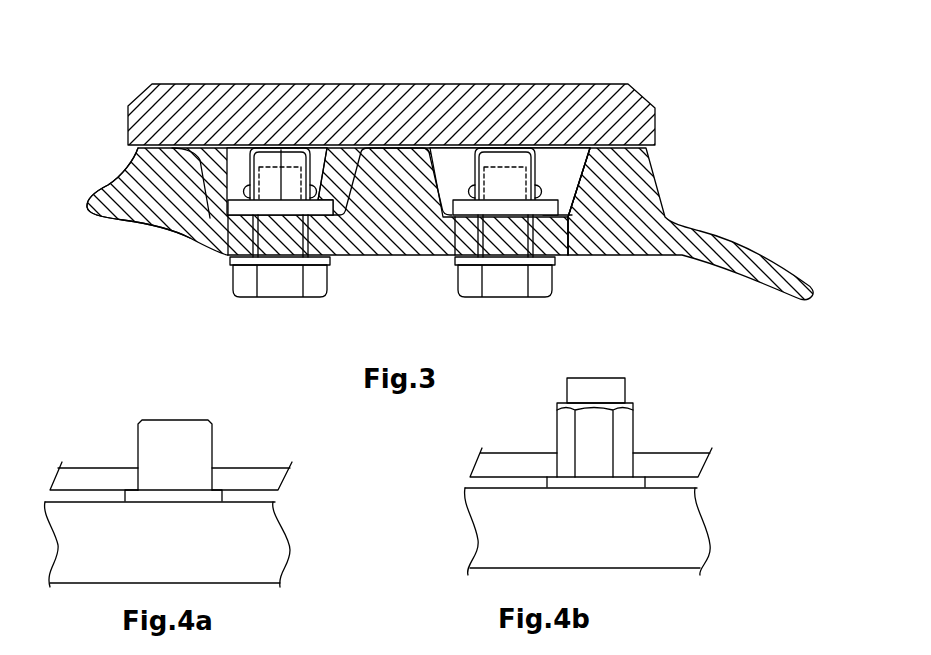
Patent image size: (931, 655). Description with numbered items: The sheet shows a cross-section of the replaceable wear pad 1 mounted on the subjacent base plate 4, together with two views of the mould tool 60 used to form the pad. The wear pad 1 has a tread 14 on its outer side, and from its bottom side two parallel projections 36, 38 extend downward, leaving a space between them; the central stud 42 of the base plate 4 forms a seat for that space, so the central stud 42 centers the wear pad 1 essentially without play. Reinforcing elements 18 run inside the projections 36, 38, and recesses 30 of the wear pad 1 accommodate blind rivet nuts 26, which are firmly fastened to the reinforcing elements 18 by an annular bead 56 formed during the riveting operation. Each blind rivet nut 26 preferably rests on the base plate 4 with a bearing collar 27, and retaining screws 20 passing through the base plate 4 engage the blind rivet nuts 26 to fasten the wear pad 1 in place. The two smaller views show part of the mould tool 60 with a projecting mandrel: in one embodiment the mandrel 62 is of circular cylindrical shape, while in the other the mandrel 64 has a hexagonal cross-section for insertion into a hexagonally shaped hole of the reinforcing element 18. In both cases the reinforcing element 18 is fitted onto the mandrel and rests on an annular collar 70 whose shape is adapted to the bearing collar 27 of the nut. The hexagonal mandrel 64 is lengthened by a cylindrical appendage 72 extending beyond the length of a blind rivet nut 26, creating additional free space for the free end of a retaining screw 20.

In FIG. 3, the wear pad 1 is at (581, 80).
In FIG. 3, the base plate 4 is at (632, 188).
In FIG. 3, the tread 14 is at (217, 84).
In FIG. 3, the reinforcing element 18 is at (232, 212).
In FIG. 4A, the reinforcing element 18 is at (253, 480).
In FIG. 4B, the reinforcing element 18 is at (673, 462).
In FIG. 3, the retaining screw 20 is at (283, 283).
In FIG. 3, the blind rivet nut 26 is at (495, 178).
In FIG. 3, the bearing collar 27 is at (578, 220).
In FIG. 3, the recess 30 is at (282, 151).
In FIG. 3, the projection 36 is at (220, 173).
In FIG. 3, the projection 38 is at (596, 195).
In FIG. 3, the central stud 42 is at (387, 173).
In FIG. 3, the annular bead 56 is at (326, 148).
In FIG. 4A, the mould tool 60 is at (222, 552).
In FIG. 4B, the mould tool 60 is at (658, 532).
In FIG. 4A, the mandrel 62 is at (173, 443).
In FIG. 4B, the mandrel 64 is at (603, 427).
In FIG. 4A, the annular collar 70 is at (130, 490).
In FIG. 4B, the cylindrical appendage 72 is at (605, 390).